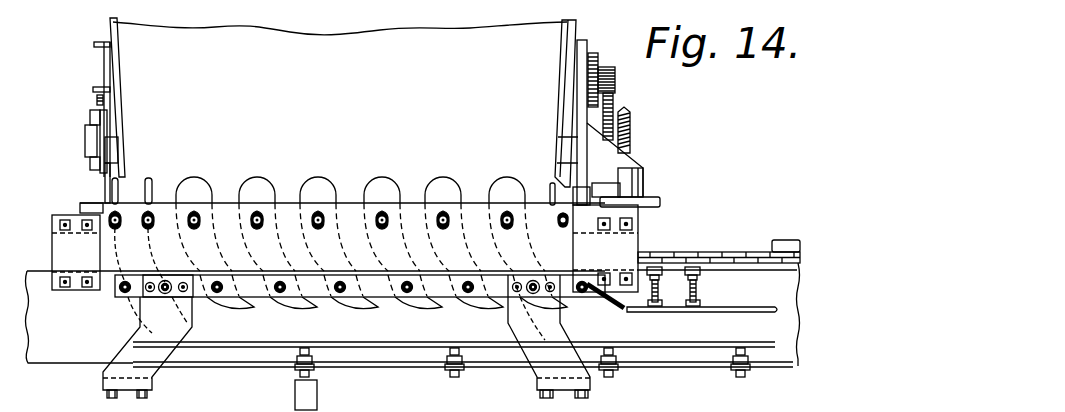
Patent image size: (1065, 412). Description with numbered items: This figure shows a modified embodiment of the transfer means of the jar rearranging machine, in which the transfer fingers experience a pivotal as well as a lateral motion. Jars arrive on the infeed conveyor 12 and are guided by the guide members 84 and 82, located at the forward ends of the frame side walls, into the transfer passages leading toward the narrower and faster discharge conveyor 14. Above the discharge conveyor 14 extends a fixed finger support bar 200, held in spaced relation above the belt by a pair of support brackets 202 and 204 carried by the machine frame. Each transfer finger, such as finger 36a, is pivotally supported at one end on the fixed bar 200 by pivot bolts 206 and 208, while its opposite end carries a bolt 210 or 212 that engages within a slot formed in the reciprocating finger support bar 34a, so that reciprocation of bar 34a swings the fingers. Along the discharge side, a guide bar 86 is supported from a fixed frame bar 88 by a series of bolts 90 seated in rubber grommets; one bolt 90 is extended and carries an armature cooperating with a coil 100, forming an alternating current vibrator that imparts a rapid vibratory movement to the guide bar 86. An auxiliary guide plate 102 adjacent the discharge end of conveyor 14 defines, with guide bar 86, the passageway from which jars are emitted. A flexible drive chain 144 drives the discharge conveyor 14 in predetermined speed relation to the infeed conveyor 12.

The infeed conveyor 12 is at (395, 40).
The guide member 84 is at (120, 118).
The guide member 82 is at (560, 130).
The bolt 210 is at (150, 207).
The bolt 212 is at (197, 213).
The reciprocating finger support bar 34a is at (290, 208).
The transfer finger 36a is at (440, 190).
The fixed finger support bar 200 is at (322, 304).
The pivot bolt 208 is at (210, 298).
The pivot bolt 206 is at (166, 300).
The discharge conveyor 14 is at (53, 343).
The support bracket 202 is at (133, 330).
The support bracket 204 is at (547, 327).
The guide bar 86 is at (268, 347).
The fixed bar 88 is at (213, 367).
The bolt 90 is at (620, 362).
The coil 100 is at (320, 389).
The flexible drive chain 144 is at (765, 229).
The auxiliary guide plate 102 is at (712, 307).